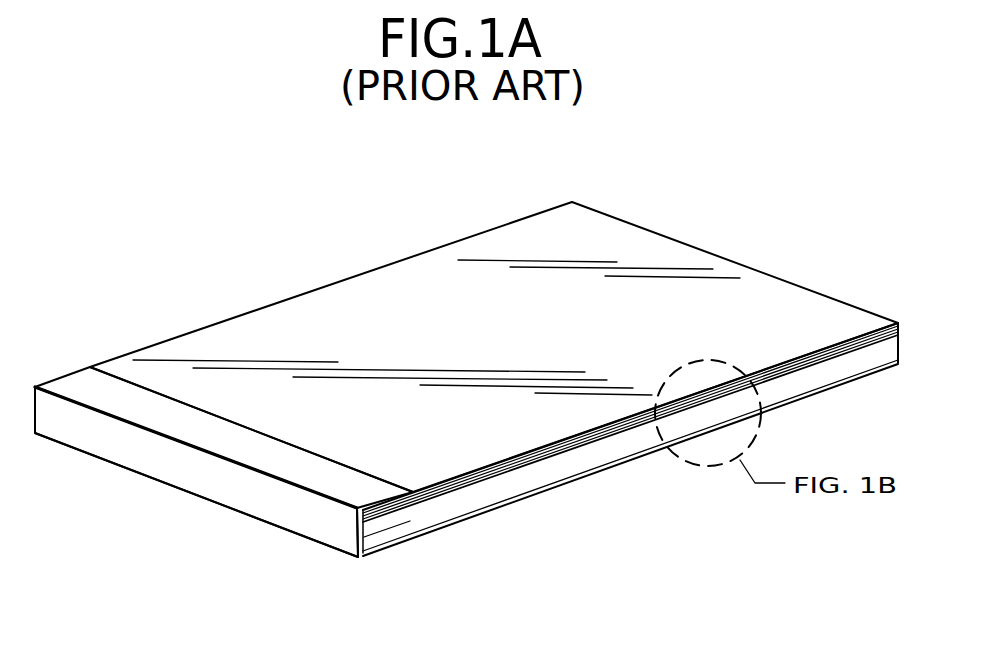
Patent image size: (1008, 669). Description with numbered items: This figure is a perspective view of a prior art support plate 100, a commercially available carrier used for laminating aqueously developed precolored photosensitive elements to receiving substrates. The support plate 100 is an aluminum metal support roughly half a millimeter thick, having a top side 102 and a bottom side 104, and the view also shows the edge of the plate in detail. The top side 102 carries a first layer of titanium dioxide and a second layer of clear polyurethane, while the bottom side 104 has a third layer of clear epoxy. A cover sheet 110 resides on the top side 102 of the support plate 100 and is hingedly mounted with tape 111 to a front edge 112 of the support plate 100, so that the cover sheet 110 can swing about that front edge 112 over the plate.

The support plate 100 is at (223, 243).
The top side 102 is at (182, 355).
The bottom side 104 is at (533, 491).
The cover sheet 110 is at (408, 260).
The tape 111 is at (202, 478).
The front edge 112 is at (353, 570).